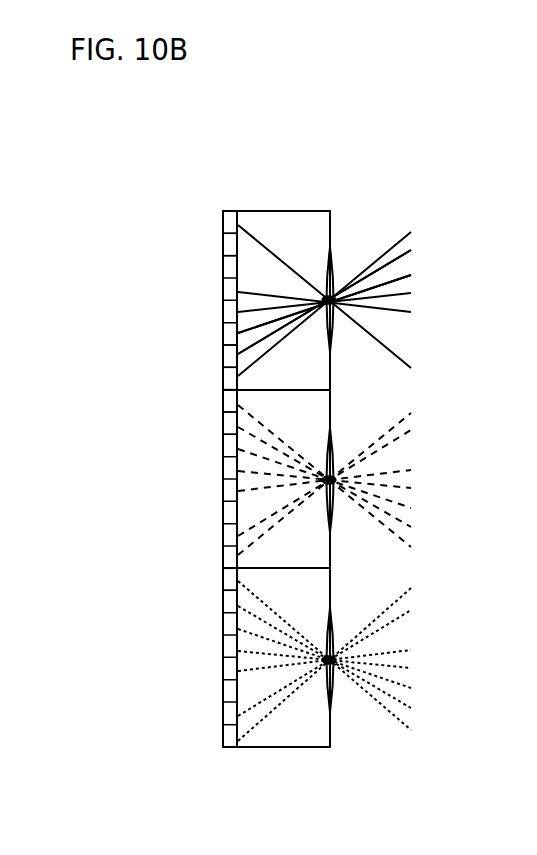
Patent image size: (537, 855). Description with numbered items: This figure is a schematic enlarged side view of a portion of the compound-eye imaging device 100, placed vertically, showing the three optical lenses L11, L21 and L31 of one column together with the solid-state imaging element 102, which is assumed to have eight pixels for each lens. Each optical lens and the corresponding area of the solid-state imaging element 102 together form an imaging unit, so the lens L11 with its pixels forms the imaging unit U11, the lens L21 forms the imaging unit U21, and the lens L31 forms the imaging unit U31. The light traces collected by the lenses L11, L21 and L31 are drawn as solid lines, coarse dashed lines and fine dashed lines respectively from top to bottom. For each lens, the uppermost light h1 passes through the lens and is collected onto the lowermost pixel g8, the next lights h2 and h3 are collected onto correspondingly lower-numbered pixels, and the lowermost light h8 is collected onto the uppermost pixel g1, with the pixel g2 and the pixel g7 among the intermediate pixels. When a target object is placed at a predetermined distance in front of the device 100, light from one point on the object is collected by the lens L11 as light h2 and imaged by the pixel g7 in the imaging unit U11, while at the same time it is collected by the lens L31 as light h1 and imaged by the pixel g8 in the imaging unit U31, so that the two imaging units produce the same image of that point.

The compound-eye imaging device 100 is at (258, 147).
The solid-state imaging element 102 is at (228, 746).
The imaging unit U11 is at (134, 302).
The imaging unit U21 is at (136, 506).
The imaging unit U31 is at (136, 674).
The optical lens L11 is at (335, 268).
The optical lens L21 is at (335, 448).
The optical lens L31 is at (335, 628).
The pixel g1 is at (228, 223).
The pixel g2 is at (228, 246).
The pixel g7 is at (228, 359).
The pixel g8 is at (228, 380).
The light h1 is at (410, 232).
The light h2 is at (412, 250).
The light h3 is at (410, 275).
The light h8 is at (410, 370).